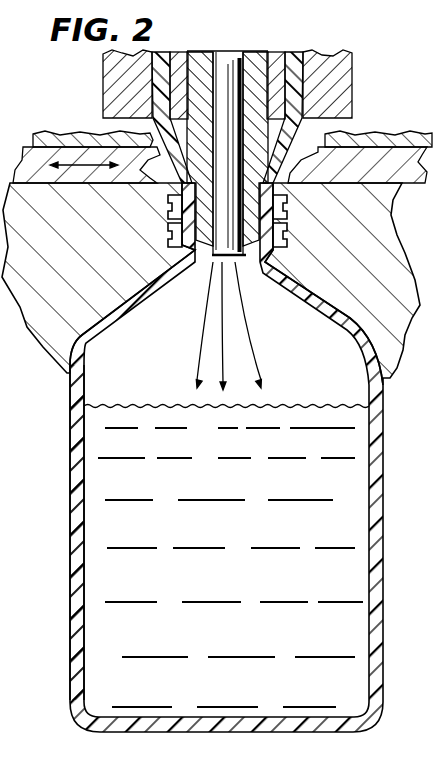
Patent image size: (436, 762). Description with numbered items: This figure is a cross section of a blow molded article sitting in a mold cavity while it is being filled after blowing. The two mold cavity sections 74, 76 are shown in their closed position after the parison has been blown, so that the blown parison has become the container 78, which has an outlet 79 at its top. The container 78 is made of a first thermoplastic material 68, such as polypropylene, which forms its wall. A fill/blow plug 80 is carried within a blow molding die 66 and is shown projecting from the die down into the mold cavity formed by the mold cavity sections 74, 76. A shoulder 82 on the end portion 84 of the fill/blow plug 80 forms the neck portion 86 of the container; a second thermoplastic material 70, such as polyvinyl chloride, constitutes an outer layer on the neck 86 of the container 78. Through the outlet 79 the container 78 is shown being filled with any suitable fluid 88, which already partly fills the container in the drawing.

The blow molding die 66 is at (341, 88).
The second thermoplastic material 70 is at (289, 118).
The fill/blow plug 80 is at (251, 67).
The mold cavity section 74 is at (78, 266).
The mold cavity section 76 is at (372, 260).
The shoulder 82 is at (166, 204).
The end portion 84 is at (166, 238).
The neck portion 86 is at (300, 245).
The container 78 is at (62, 494).
The first thermoplastic material 68 is at (75, 418).
The outlet 79 is at (252, 262).
The fluid 88 is at (244, 535).